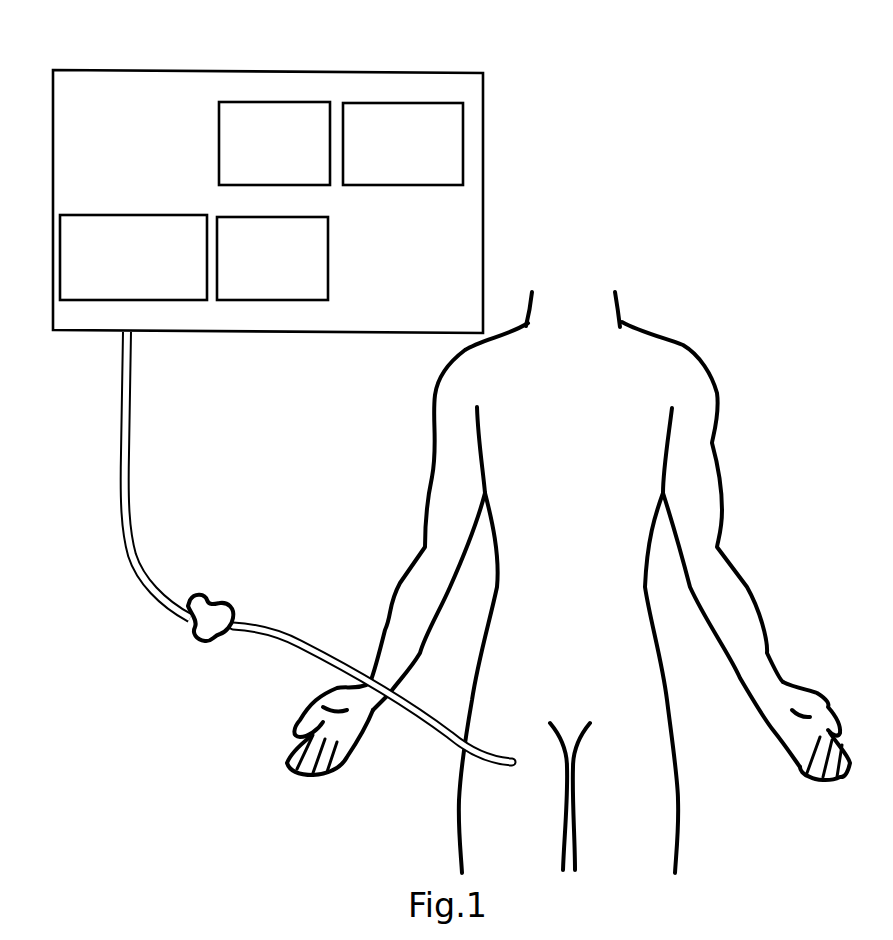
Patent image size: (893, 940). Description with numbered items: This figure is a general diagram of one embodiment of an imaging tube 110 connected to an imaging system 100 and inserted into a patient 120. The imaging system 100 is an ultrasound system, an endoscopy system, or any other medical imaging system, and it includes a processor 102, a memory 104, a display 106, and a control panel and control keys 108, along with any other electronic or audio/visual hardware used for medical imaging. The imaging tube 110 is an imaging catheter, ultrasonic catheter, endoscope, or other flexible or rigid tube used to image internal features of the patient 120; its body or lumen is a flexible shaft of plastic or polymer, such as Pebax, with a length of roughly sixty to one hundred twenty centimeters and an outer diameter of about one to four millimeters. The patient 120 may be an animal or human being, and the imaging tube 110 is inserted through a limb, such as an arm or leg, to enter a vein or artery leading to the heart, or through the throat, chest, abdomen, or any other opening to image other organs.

The imaging system 100 is at (211, 70).
The processor 102 is at (417, 174).
The memory 104 is at (294, 174).
The display 106 is at (294, 291).
The control panel and control keys 108 is at (152, 291).
The imaging tube 110 is at (297, 643).
The patient 120 is at (650, 330).